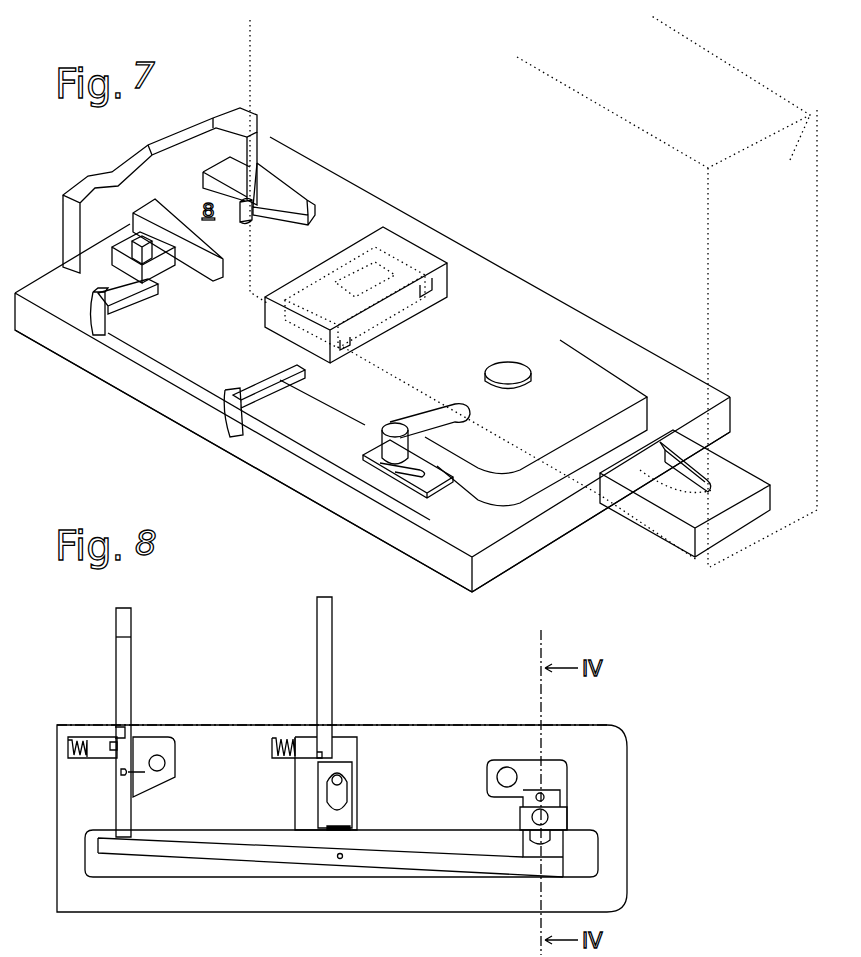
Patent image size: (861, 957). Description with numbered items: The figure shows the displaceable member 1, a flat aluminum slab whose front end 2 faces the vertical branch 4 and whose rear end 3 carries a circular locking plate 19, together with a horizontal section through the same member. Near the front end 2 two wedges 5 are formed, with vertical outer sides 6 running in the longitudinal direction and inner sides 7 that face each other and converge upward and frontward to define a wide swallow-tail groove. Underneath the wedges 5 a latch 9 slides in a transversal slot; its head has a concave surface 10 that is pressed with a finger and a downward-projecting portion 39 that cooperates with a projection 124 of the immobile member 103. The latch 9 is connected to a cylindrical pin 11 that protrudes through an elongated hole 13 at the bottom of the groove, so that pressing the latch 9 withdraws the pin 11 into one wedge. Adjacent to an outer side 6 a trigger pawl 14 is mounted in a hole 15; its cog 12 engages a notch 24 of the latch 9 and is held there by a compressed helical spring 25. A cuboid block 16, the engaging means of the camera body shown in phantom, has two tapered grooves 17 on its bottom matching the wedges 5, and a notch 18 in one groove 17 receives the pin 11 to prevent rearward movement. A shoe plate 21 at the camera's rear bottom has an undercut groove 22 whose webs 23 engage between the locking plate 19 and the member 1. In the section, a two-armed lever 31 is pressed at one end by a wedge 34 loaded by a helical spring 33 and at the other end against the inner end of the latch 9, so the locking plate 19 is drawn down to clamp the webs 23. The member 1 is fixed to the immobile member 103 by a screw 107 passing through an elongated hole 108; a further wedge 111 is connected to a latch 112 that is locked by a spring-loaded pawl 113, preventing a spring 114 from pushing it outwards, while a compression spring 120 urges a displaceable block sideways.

In FIG. 7, the displaceable member 1 is at (480, 470).
In FIG. 7, the front end 2 is at (92, 283).
In FIG. 8, the front end 2 is at (55, 872).
In FIG. 7, the rear end 3 is at (563, 470).
In FIG. 7, the vertical branch 4 is at (135, 165).
In FIG. 7, the wedges 5 is at (227, 173).
In FIG. 7, the outer sides 6 is at (285, 216).
In FIG. 7, the inner sides 7 is at (240, 212).
In FIG. 7, the latch 9 is at (133, 305).
In FIG. 8, the latch 9 is at (127, 690).
In FIG. 7, the concave surface 10 is at (100, 323).
In FIG. 7, the cylindrical pin 11 is at (260, 160).
In FIG. 8, the cog 12 is at (113, 752).
In FIG. 7, the elongated hole 13 is at (250, 203).
In FIG. 7, the trigger pawl 14 is at (138, 240).
In FIG. 8, the trigger pawl 14 is at (95, 750).
In FIG. 7, the hole 15 is at (157, 253).
In FIG. 7, the cuboid block 16 is at (335, 268).
In FIG. 7, the tapered grooves 17 is at (375, 255).
In FIG. 7, the notch 18 is at (380, 283).
In FIG. 7, the locking plate 19 is at (510, 360).
In FIG. 7, the shoe plate 21 is at (730, 472).
In FIG. 7, the undercut groove 22 is at (648, 472).
In FIG. 7, the webs 23 is at (693, 483).
In FIG. 8, the notch 24 is at (115, 730).
In FIG. 8, the helical spring 25 is at (70, 746).
In FIG. 8, the two-armed lever 31 is at (385, 855).
In FIG. 8, the helical spring 33 is at (510, 768).
In FIG. 8, the wedge 34 is at (557, 843).
In FIG. 7, the downward-projecting portion 39 is at (107, 330).
In FIG. 8, the downward-projecting portion 39 is at (128, 620).
In FIG. 7, the immobile member 103 is at (287, 468).
In FIG. 7, the screw 107 is at (393, 448).
In FIG. 7, the elongated hole 108 is at (417, 453).
In FIG. 8, the wedge 111 is at (352, 810).
In FIG. 7, the latch 112 is at (247, 417).
In FIG. 8, the latch 112 is at (330, 700).
In FIG. 8, the spring-loaded pawl 113 is at (312, 745).
In FIG. 8, the spring 114 is at (325, 828).
In FIG. 8, the compression spring 120 is at (340, 782).
In FIG. 7, the projection 124 is at (92, 283).